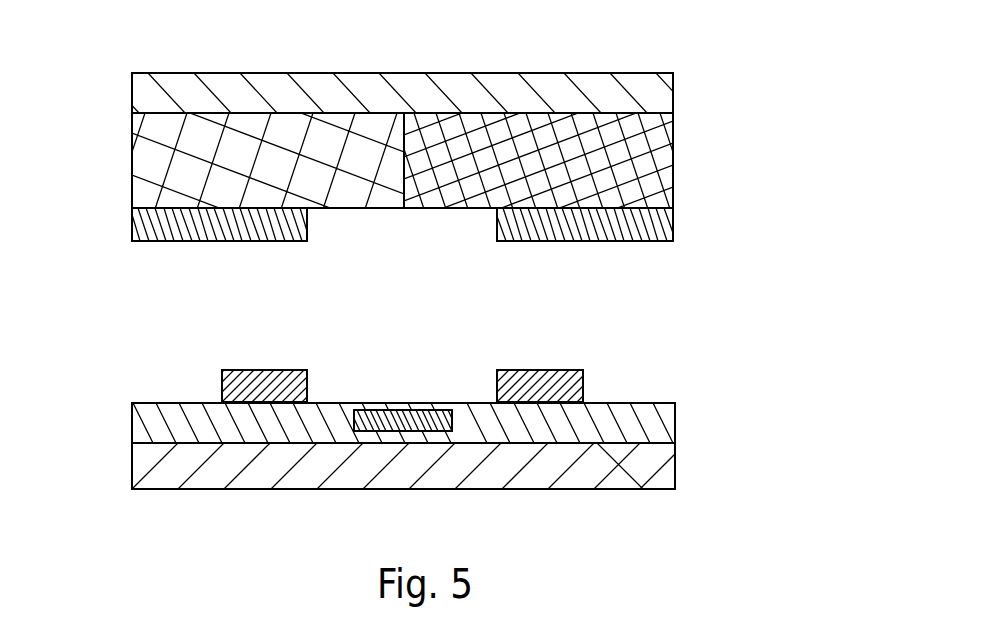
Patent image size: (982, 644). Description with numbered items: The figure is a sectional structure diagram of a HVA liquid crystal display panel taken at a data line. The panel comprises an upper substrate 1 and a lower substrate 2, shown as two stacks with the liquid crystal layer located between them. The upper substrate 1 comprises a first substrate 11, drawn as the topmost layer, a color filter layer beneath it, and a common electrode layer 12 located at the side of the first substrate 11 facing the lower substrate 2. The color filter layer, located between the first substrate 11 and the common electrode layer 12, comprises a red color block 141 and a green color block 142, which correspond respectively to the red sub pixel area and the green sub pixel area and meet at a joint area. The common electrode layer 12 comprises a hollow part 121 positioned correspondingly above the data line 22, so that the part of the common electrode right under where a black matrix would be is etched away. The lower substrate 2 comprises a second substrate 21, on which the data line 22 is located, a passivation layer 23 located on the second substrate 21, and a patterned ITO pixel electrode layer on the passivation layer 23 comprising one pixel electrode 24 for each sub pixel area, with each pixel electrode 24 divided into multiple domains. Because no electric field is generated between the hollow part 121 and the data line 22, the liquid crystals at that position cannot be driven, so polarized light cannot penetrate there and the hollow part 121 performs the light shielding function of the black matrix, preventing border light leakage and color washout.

The upper substrate 1 is at (108, 75).
The first substrate 11 is at (605, 98).
The red color block 141 is at (380, 194).
The green color block 142 is at (618, 162).
The common electrode layer 12 is at (617, 224).
The hollow part 121 is at (443, 228).
The lower substrate 2 is at (108, 370).
The second substrate 21 is at (572, 470).
The data line 22 is at (460, 422).
The passivation layer 23 is at (560, 430).
The pixel electrode 24 is at (553, 375).